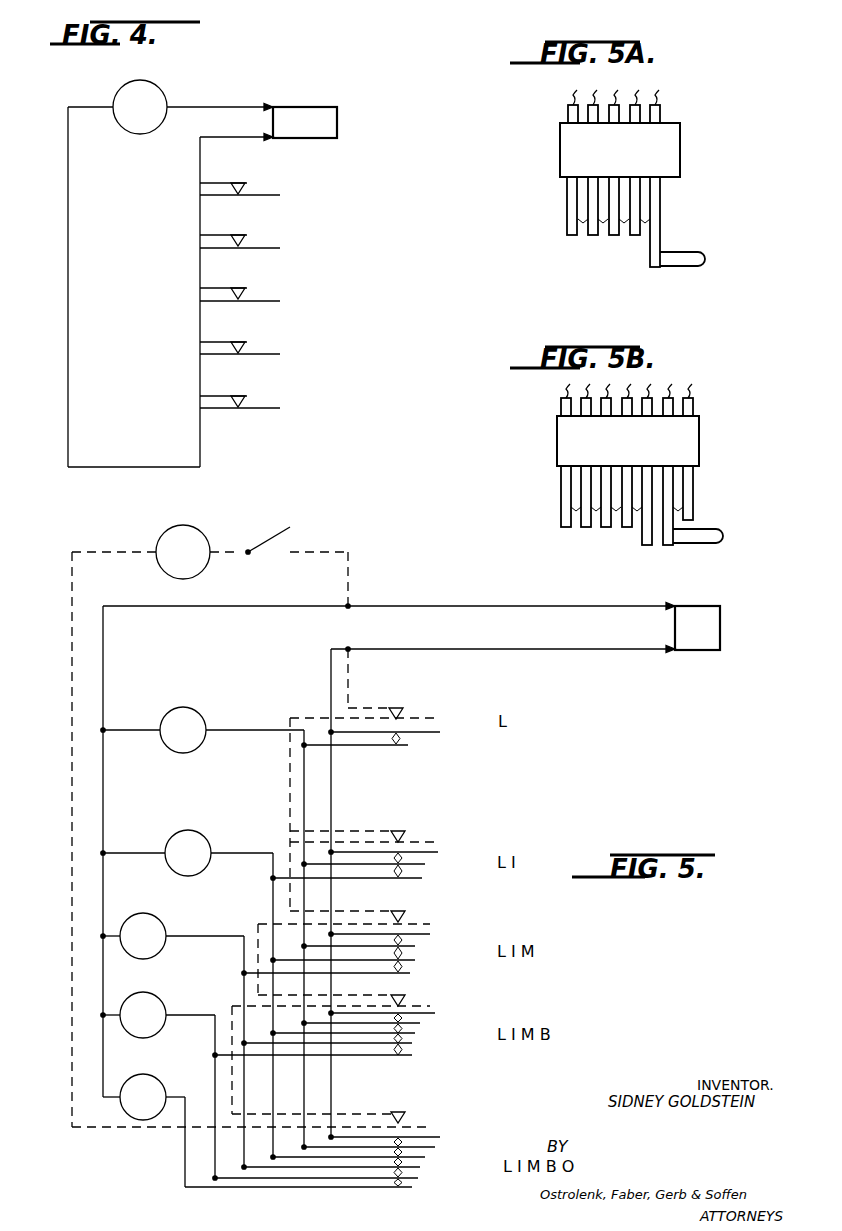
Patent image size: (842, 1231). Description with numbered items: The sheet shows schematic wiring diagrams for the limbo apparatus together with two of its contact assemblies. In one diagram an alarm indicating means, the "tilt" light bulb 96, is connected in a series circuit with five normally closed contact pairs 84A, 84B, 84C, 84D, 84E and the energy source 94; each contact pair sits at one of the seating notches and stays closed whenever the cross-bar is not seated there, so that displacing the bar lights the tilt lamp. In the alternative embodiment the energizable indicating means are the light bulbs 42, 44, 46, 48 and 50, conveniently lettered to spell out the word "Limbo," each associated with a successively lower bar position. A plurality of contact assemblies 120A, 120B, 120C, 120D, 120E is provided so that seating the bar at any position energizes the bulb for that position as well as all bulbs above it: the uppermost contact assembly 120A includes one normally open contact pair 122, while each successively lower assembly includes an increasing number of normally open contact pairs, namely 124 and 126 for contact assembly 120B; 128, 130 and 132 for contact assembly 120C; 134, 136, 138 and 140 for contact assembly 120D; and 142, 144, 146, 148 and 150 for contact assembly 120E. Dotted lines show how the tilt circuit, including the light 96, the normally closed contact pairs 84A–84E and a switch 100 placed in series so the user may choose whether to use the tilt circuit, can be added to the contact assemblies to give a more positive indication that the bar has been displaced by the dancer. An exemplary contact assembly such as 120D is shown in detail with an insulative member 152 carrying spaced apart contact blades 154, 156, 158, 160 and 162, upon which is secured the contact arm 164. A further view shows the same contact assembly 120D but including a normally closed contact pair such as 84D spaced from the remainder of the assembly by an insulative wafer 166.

In FIG. 5, the light bulb 42 is at (200, 714).
In FIG. 5, the light bulb 44 is at (205, 837).
In FIG. 5, the light bulb 46 is at (163, 923).
In FIG. 5, the light bulb 48 is at (163, 1002).
In FIG. 5, the light bulb 50 is at (160, 1081).
In FIG. 4, the normally closed contact pair 84A is at (260, 188).
In FIG. 5, the normally closed contact pair 84A is at (405, 712).
In FIG. 4, the normally closed contact pair 84B is at (260, 241).
In FIG. 5, the normally closed contact pair 84B is at (406, 834).
In FIG. 4, the normally closed contact pair 84C is at (262, 295).
In FIG. 5, the normally closed contact pair 84C is at (406, 914).
In FIG. 4, the normally closed contact pair 84D is at (260, 348).
In FIG. 5, the normally closed contact pair 84D is at (406, 998).
In FIG. 4, the normally closed contact pair 84E is at (264, 402).
In FIG. 5, the normally closed contact pair 84E is at (406, 1115).
In FIG. 4, the energy source 94 is at (252, 122).
In FIG. 5, the energy source 94 is at (707, 638).
In FIG. 4, the tilt light bulb 96 is at (150, 134).
In FIG. 5, the tilt light bulb 96 is at (203, 572).
In FIG. 5, the switch 100 is at (258, 556).
In FIG. 5, the contact assembly 120A is at (478, 702).
In FIG. 5, the contact assembly 120B is at (490, 828).
In FIG. 5B, the contact assembly 120C is at (662, 481).
In FIG. 5, the contact assembly 120C is at (488, 927).
In FIG. 5A, the contact assembly 120D is at (634, 192).
In FIG. 5, the contact assembly 120D is at (485, 1008).
In FIG. 5, the contact assembly 120E is at (483, 1122).
In FIG. 5, the normally open contact pair 122 is at (438, 738).
In FIG. 5, the normally open contact pair 124 is at (418, 860).
In FIG. 5, the normally open contact pair 126 is at (423, 871).
In FIG. 5, the normally open contact pair 128 is at (418, 942).
In FIG. 5, the normally open contact pair 130 is at (418, 957).
In FIG. 5, the normally open contact pair 132 is at (413, 971).
In FIG. 5, the normally open contact pair 134 is at (412, 1020).
In FIG. 5, the normally open contact pair 136 is at (420, 1030).
In FIG. 5, the normally open contact pair 138 is at (420, 1040).
In FIG. 5, the normally open contact pair 140 is at (415, 1050).
In FIG. 5, the normally open contact pair 142 is at (422, 1143).
In FIG. 5, the normally open contact pair 144 is at (418, 1153).
In FIG. 5, the normally open contact pair 146 is at (418, 1162).
In FIG. 5, the normally open contact pair 148 is at (418, 1173).
In FIG. 5, the normally open contact pair 150 is at (422, 1183).
In FIG. 5A, the insulative member 152 is at (680, 157).
In FIG. 5B, the insulative member 152 is at (687, 447).
In FIG. 5A, the contact blade 154 is at (566, 214).
In FIG. 5A, the contact blade 156 is at (591, 237).
In FIG. 5A, the contact blade 158 is at (612, 237).
In FIG. 5A, the contact blade 160 is at (635, 237).
In FIG. 5A, the contact blade 162 is at (650, 260).
In FIG. 5A, the contact arm 164 is at (678, 252).
In FIG. 5B, the contact arm 164 is at (700, 528).
In FIG. 5B, the insulative wafer 166 is at (657, 545).